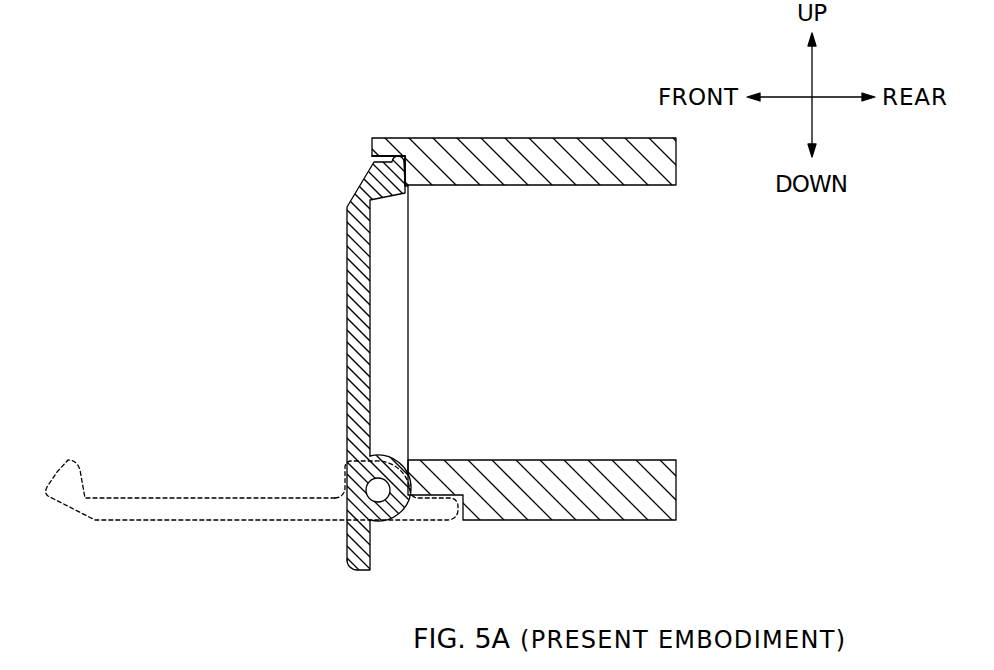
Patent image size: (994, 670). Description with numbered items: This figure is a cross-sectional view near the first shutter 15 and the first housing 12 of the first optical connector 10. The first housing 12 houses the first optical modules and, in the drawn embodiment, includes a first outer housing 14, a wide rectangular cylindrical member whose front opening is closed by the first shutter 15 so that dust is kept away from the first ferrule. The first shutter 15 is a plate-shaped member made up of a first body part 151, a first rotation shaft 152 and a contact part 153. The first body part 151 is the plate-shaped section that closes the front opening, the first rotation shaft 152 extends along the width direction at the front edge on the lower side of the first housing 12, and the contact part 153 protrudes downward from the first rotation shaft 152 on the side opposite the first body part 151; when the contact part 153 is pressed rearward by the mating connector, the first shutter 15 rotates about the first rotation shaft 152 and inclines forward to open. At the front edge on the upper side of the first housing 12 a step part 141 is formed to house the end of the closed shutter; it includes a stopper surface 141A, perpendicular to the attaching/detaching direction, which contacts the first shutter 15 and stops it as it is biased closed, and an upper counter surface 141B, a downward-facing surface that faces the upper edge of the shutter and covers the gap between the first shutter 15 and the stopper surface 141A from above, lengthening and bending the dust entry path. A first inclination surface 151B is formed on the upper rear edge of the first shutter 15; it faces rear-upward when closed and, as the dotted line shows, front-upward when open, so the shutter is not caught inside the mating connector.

The first optical connector 10 is at (633, 77).
The first housing 12 is at (515, 297).
The first outer housing 14 is at (540, 137).
The step part 141 is at (495, 57).
The stopper surface 141A is at (407, 160).
The upper counter surface 141B is at (399, 156).
The first shutter 15 is at (290, 232).
The first body part 151 is at (347, 308).
The first inclination surface 151B is at (57, 472).
The first rotation shaft 152 is at (377, 493).
The contact part 153 is at (347, 553).